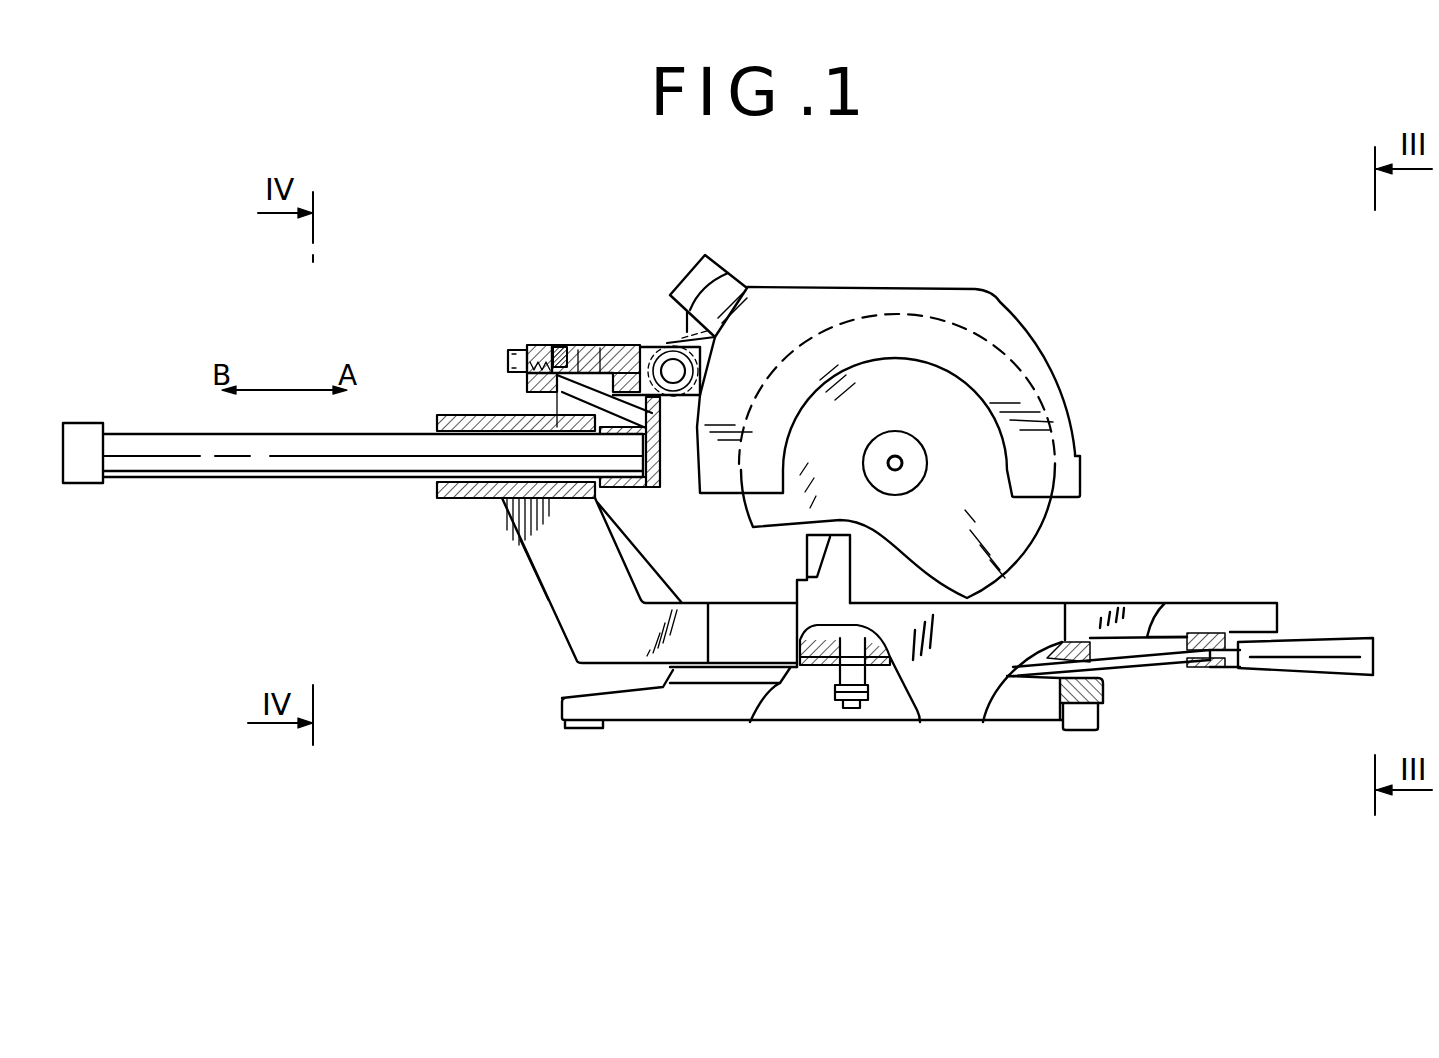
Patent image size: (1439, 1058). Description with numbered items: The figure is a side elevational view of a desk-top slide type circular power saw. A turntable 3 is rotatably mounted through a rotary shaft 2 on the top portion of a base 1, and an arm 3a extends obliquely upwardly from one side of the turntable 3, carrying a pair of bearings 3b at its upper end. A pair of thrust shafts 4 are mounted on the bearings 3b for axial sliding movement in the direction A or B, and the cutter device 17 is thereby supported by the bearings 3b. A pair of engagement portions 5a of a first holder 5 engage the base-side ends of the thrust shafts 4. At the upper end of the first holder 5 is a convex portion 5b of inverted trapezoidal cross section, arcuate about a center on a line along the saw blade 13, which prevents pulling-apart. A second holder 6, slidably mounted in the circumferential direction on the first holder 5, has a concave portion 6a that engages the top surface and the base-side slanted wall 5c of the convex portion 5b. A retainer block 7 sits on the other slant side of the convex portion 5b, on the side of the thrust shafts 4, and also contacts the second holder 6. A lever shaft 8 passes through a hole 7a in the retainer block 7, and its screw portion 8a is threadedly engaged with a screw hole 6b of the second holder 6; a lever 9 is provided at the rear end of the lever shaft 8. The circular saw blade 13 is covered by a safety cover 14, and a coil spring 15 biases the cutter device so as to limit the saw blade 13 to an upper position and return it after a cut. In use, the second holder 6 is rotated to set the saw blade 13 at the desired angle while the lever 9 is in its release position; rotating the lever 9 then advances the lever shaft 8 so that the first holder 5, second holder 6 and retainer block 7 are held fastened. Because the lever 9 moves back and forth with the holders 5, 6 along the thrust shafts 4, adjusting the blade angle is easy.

The base 1 is at (700, 713).
The rotary shaft 2 is at (868, 692).
The turntable 3 is at (618, 645).
The arm 3a is at (545, 582).
The bearings 3b is at (462, 500).
The thrust shafts 4 is at (202, 465).
The first holder 5 is at (653, 452).
The engagement portions 5a is at (622, 480).
The convex portion 5b is at (578, 350).
The side slanted wall 5c is at (663, 345).
The second holder 6 is at (632, 345).
The concave portion 6a is at (608, 345).
The screw hole 6b is at (558, 348).
The retainer block 7 is at (532, 345).
The hole 7a is at (530, 384).
The lever shaft 8 is at (512, 352).
The screw portion 8a is at (557, 393).
The lever 9 is at (520, 368).
The circular saw blade 13 is at (1018, 538).
The safety cover 14 is at (1058, 398).
The coil spring 15 is at (728, 275).
The cutter device 17 is at (998, 257).